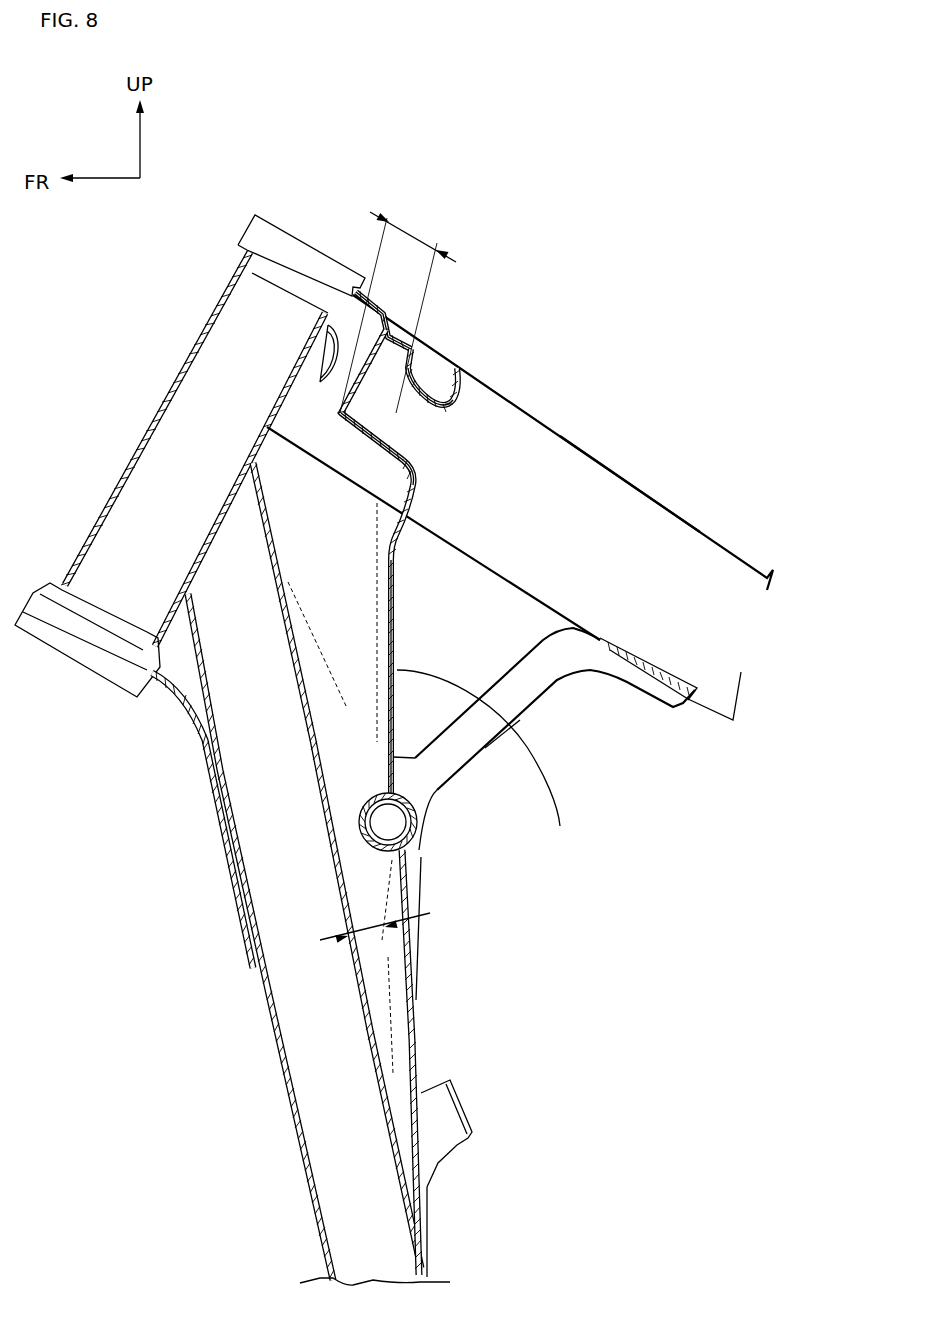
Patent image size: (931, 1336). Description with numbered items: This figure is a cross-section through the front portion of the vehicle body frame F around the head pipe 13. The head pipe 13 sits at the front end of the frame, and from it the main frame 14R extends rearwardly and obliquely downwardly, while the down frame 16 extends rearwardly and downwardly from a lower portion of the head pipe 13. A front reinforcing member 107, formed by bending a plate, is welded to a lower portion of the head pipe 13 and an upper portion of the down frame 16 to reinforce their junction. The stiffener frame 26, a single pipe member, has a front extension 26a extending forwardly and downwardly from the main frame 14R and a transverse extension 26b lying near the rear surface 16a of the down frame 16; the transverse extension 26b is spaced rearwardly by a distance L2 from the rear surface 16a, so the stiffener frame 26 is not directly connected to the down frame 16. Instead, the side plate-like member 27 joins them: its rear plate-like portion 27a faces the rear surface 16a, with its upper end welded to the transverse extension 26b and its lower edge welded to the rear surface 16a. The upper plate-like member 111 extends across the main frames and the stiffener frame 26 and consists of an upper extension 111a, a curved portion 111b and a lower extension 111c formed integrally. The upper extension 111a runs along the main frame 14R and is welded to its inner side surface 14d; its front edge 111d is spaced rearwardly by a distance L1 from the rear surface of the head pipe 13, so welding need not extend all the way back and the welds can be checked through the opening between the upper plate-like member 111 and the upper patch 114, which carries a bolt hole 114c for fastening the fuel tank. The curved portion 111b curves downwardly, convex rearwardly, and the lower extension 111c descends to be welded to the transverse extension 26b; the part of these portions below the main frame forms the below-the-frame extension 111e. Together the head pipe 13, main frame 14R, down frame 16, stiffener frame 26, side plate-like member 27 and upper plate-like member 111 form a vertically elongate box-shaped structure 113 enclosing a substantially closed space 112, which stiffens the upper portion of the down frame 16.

The head pipe 13 is at (147, 473).
The vehicle body frame F is at (202, 317).
The front reinforcing member 107 is at (190, 713).
The down frame 16 is at (331, 874).
The rear surface of the down frame 16a is at (427, 1197).
The side plate-like member 27 is at (466, 1062).
The rear plate-like portion 27a is at (420, 1048).
The main frame 14R is at (520, 507).
The inner side surface 14d is at (630, 500).
The upper patch 114 is at (463, 337).
The bolt hole 114c is at (392, 322).
The upper plate-like member 111 is at (406, 608).
The upper extension 111a is at (411, 366).
The curved portion 111b is at (412, 483).
The lower extension 111c is at (485, 748).
The front edge 111d is at (335, 413).
The below-the-frame extension 111e is at (403, 603).
The substantially closed space 112 is at (352, 725).
The box-shaped structure 113 is at (413, 847).
The stiffener frame 26 is at (411, 747).
The front extension 26a is at (501, 763).
The transverse extension 26b is at (350, 812).
The distance L1 is at (398, 312).
The distance L2 is at (390, 966).